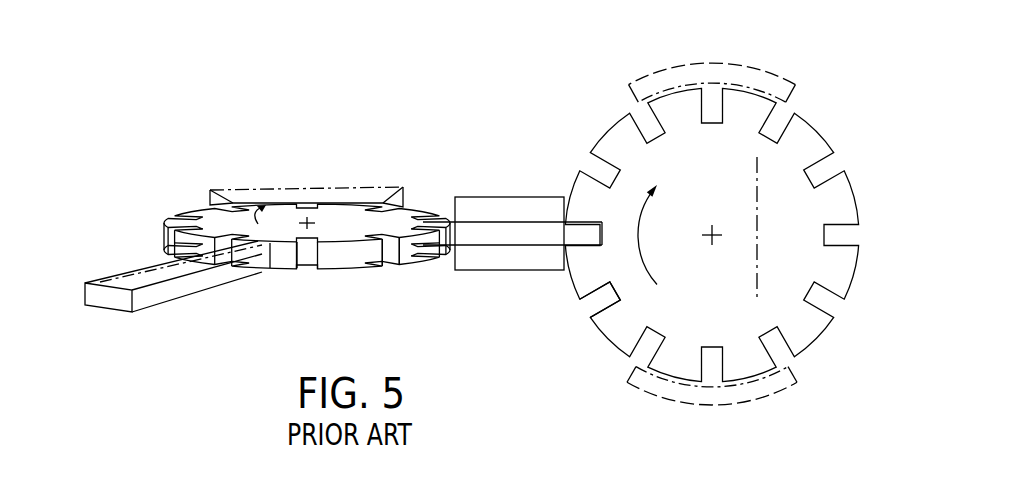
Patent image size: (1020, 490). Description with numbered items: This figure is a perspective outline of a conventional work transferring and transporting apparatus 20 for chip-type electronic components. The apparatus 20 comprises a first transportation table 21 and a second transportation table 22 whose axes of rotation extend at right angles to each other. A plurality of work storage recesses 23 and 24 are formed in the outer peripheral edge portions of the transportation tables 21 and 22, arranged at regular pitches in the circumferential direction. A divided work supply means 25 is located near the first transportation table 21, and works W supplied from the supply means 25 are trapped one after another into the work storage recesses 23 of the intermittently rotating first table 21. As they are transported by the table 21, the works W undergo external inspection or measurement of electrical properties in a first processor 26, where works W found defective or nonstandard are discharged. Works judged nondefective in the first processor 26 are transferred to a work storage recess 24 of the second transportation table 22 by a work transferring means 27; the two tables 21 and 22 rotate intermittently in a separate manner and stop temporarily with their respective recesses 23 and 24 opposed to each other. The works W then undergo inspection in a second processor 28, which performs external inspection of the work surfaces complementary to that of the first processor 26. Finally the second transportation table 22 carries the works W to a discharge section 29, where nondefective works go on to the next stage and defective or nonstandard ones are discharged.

The work transferring and transporting apparatus 20 is at (459, 126).
The first transportation table 21 is at (420, 260).
The second transportation table 22 is at (605, 132).
The work storage recesses 23 is at (382, 253).
The work storage recesses 24 is at (588, 300).
The divided work supply means 25 is at (162, 302).
The first processor 26 is at (383, 185).
The work transferring means 27 is at (510, 196).
The second processor 28 is at (650, 72).
The discharge section 29 is at (632, 390).
The works W is at (277, 267).